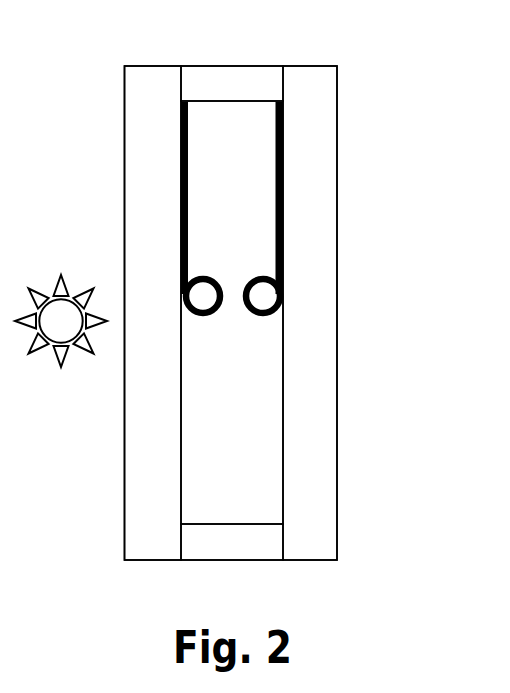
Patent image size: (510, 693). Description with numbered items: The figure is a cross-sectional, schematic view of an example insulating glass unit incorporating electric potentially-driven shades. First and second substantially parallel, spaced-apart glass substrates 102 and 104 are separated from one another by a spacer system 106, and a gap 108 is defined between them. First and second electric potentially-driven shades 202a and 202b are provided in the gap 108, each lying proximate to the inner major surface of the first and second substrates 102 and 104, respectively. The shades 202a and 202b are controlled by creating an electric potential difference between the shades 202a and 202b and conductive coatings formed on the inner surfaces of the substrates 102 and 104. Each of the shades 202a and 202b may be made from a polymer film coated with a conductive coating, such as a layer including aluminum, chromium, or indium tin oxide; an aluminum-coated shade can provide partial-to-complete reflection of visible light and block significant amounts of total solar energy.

The first glass substrate 102 is at (124, 131).
The second glass substrate 104 is at (337, 131).
The spacer system 106 is at (232, 66).
The gap 108 is at (248, 428).
The first electric potentially-driven shade 202a is at (203, 315).
The second electric potentially-driven shade 202b is at (263, 315).